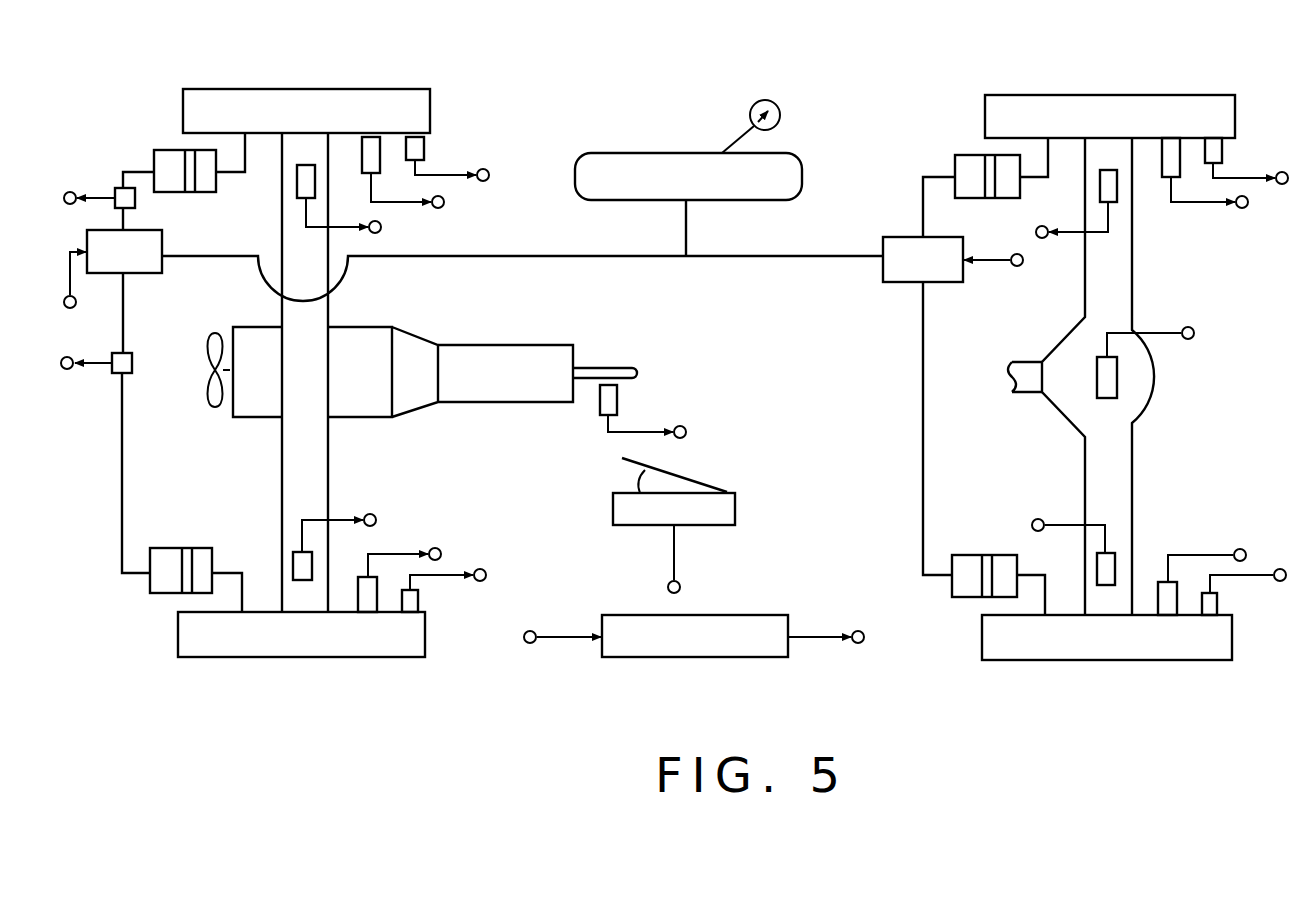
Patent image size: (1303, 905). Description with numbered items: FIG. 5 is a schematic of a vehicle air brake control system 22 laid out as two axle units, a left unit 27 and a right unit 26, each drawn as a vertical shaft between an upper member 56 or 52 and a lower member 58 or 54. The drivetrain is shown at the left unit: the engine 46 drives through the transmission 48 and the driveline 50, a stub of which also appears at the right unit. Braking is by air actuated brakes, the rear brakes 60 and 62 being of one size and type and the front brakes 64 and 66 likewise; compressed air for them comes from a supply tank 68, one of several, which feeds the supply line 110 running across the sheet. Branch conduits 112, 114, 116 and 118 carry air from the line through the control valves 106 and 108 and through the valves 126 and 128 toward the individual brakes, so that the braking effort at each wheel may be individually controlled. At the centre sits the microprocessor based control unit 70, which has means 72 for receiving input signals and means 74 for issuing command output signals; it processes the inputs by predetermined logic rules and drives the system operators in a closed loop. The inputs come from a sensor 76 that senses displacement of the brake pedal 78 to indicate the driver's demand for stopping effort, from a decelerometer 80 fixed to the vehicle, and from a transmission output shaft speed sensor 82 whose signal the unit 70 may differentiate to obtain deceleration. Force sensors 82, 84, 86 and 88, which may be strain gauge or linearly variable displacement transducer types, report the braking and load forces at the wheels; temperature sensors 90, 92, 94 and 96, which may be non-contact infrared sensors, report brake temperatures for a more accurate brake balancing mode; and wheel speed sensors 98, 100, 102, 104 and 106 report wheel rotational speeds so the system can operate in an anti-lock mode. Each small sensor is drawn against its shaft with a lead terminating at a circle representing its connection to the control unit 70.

The apparatus 22 is at (868, 92).
The right spindle unit 26 is at (1124, 76).
The left spindle unit 27 is at (310, 74).
The engine 46 is at (263, 388).
The transmission 48 is at (480, 390).
The driveline 50 is at (596, 372).
The upper plate 52 is at (1050, 112).
The lower plate 54 is at (1035, 642).
The upper plate 56 is at (360, 112).
The lower plate 58 is at (282, 637).
The air actuated brake 60 is at (975, 198).
The air actuated brake 62 is at (968, 562).
The air actuated brake 64 is at (182, 193).
The air actuated brake 66 is at (172, 548).
The supply tank 68 is at (672, 172).
The control unit 70 is at (728, 657).
The means for receiving input signals 72 is at (556, 637).
The means for issuing command output signals 74 is at (815, 637).
The sensor 76 is at (735, 505).
The brake pedal 78 is at (668, 473).
The decelerometer 80 is at (1117, 370).
The transmission output shaft speed sensor 82 is at (617, 400).
The force sensor 84 is at (1105, 575).
The force sensor 86 is at (297, 181).
The force sensor 88 is at (293, 566).
The temperature sensor 90 is at (1222, 155).
The temperature sensor 92 is at (1217, 605).
The temperature sensor 94 is at (424, 155).
The temperature sensor 96 is at (420, 598).
The wheel speed sensor 98 is at (1165, 166).
The wheel speed sensor 100 is at (1158, 590).
The wheel speed sensor 102 is at (360, 158).
The wheel speed sensor 104 is at (358, 592).
The wheel speed sensor 106 is at (905, 272).
The control valve 108 is at (143, 262).
The supply line 110 is at (753, 256).
The supply conduit 112 is at (933, 177).
The supply conduit 114 is at (918, 440).
The supply conduit 116 is at (123, 170).
The supply conduit 118 is at (122, 462).
The valve 126 is at (115, 192).
The valve 128 is at (132, 366).